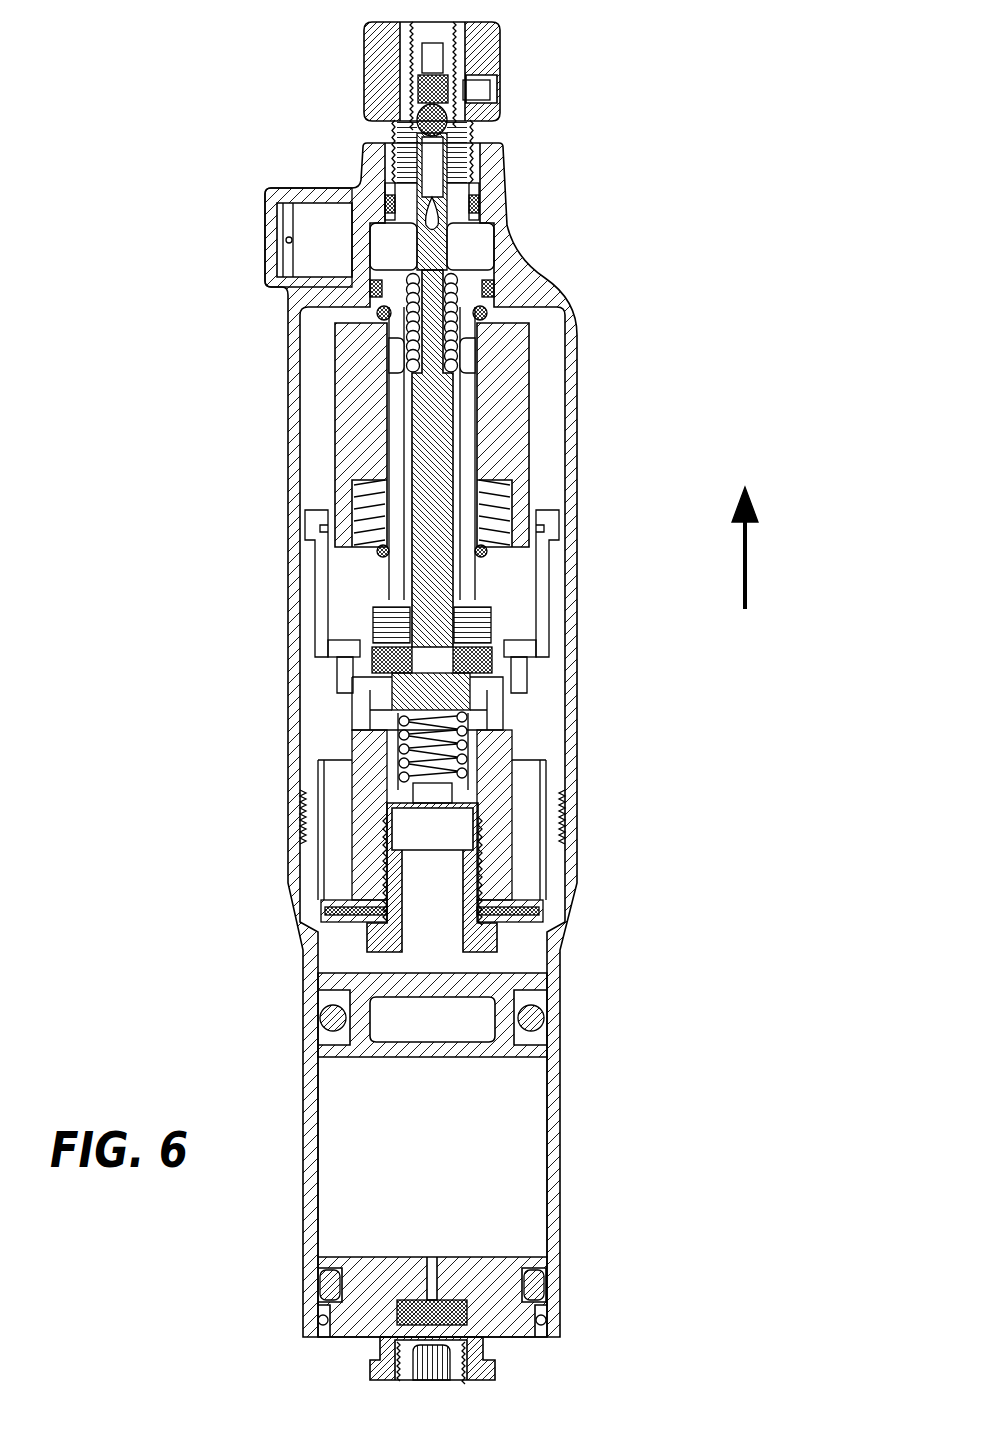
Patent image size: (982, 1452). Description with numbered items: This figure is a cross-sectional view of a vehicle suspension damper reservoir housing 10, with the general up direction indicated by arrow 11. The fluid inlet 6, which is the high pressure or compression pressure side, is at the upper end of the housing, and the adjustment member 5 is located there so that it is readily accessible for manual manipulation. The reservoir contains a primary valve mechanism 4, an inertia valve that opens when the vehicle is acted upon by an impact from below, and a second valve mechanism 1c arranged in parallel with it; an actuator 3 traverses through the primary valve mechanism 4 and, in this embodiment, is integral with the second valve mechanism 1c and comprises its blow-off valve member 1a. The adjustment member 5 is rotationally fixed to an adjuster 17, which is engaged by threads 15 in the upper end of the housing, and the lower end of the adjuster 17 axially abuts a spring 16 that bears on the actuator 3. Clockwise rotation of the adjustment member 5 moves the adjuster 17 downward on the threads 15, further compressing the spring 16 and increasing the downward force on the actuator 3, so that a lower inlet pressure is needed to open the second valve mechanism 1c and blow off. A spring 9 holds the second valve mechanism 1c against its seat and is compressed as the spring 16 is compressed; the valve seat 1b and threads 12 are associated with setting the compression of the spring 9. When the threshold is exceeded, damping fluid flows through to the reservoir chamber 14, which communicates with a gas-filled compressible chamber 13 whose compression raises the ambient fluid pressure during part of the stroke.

The blow-off valve member 1a is at (393, 697).
The valve seat 1b is at (370, 655).
The second valve mechanism 1c is at (285, 694).
The actuator 3 is at (422, 398).
The primary valve mechanism 4 is at (353, 352).
The adjustment member 5 is at (372, 88).
The fluid inlet 6 is at (261, 235).
The spring 9 is at (393, 768).
The vehicle suspension damper reservoir housing 10 is at (592, 157).
The arrow 11 is at (749, 560).
The threads 12 is at (478, 845).
The compressible chamber 13 is at (447, 1157).
The reservoir chamber 14 is at (527, 948).
The threads 15 is at (471, 160).
The spring 16 is at (453, 363).
The adjuster 17 is at (471, 129).